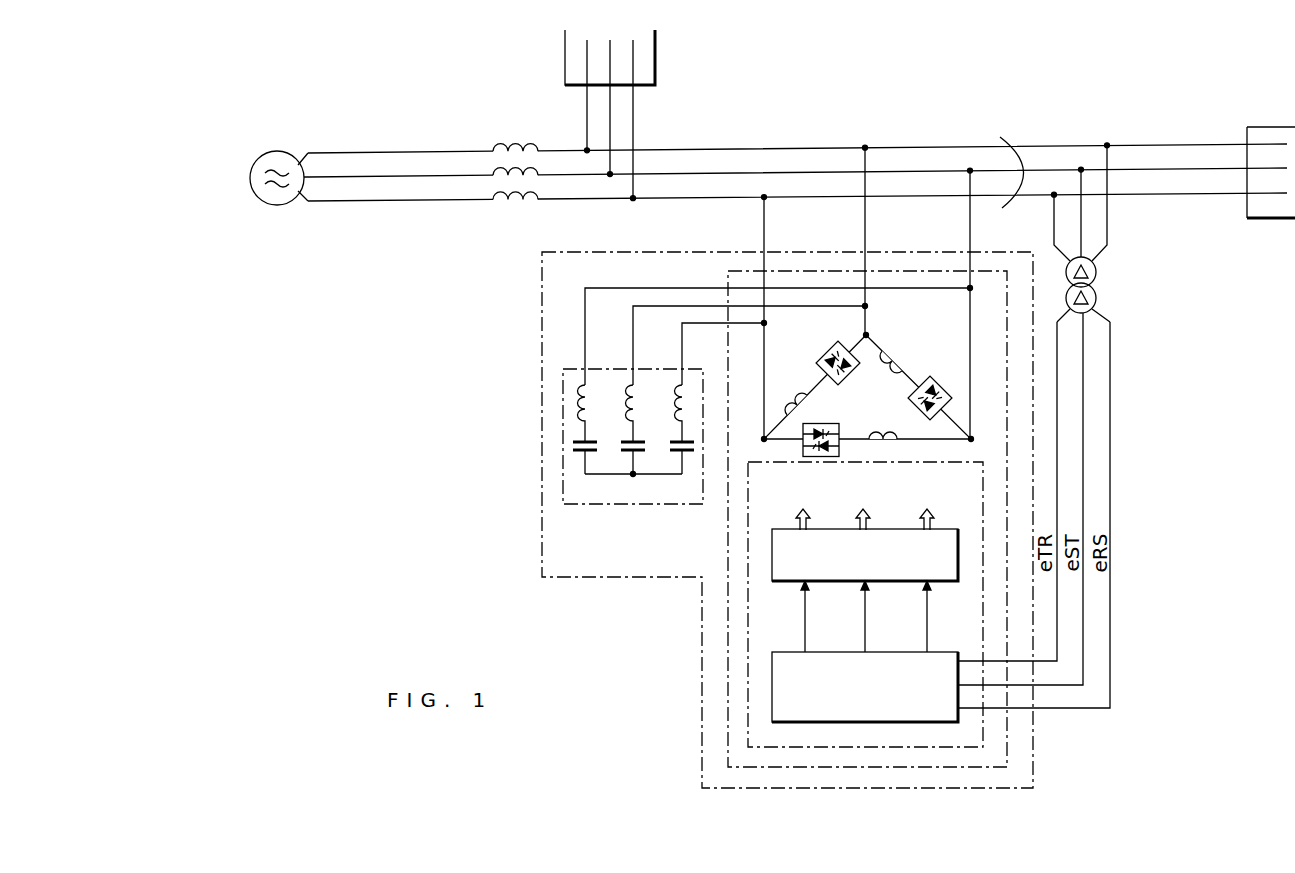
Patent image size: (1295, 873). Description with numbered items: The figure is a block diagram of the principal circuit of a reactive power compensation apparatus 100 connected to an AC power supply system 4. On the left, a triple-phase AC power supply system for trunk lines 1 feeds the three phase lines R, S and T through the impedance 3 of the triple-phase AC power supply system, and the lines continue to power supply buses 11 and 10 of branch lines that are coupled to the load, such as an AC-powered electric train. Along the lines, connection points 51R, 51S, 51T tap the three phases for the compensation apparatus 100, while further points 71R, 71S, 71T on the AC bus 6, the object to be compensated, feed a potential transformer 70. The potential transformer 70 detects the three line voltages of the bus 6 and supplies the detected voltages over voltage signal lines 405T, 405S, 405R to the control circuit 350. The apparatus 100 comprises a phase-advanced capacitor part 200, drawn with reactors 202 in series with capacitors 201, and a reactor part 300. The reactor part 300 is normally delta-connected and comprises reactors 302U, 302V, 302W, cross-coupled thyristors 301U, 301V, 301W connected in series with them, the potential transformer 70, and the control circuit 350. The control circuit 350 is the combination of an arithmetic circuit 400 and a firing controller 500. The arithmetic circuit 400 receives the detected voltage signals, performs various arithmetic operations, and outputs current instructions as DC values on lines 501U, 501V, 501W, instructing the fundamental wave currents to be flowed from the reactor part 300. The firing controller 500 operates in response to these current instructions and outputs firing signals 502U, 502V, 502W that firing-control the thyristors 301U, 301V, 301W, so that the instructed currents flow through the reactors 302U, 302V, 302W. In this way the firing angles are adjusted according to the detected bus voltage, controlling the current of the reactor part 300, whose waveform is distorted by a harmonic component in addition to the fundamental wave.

The triple-phase AC power supply system for trunk lines 1 is at (277, 151).
The impedance of triple-phase AC power supply system 3 is at (497, 205).
The AC power supply system 4 is at (554, 134).
The power supply bus of branch line 11 is at (662, 62).
The R-phase connection point 51R is at (867, 146).
The S-phase connection point 51S is at (971, 173).
The T-phase connection point 51T is at (768, 201).
The AC bus 6 is at (1010, 148).
The R-phase voltage detection point 71R is at (1114, 188).
The S-phase voltage detection point 71S is at (1076, 201).
The T-phase voltage detection point 71T is at (1051, 216).
The power supply bus of branch line 10 is at (1240, 208).
The potential transformer 70 is at (1096, 300).
The T-phase voltage signal line 405T is at (1057, 505).
The S-phase voltage signal line 405S is at (1083, 505).
The R-phase voltage signal line 405R is at (1110, 506).
The reactive power compensation apparatus 100 is at (538, 547).
The control circuit 350 is at (990, 724).
The phase-advanced capacitor part 200 is at (558, 441).
The capacitors 201 is at (672, 452).
The filter reactors 202 is at (680, 392).
The reactor part 300 is at (897, 306).
The cross-coupled thyristor 301U is at (945, 372).
The cross-coupled thyristor 301V is at (803, 447).
The cross-coupled thyristor 301W is at (824, 352).
The reactor 302U is at (898, 349).
The reactor 302V is at (897, 442).
The reactor 302W is at (810, 404).
The firing controller 500 is at (772, 560).
The U-phase firing signal 502U is at (800, 498).
The V-phase firing signal 502V is at (864, 498).
The W-phase firing signal 502W is at (930, 498).
The arithmetic circuit 400 is at (772, 688).
The U-phase current reference signal 501U is at (806, 616).
The V-phase current reference signal 501V is at (867, 616).
The W-phase current reference signal 501W is at (931, 616).